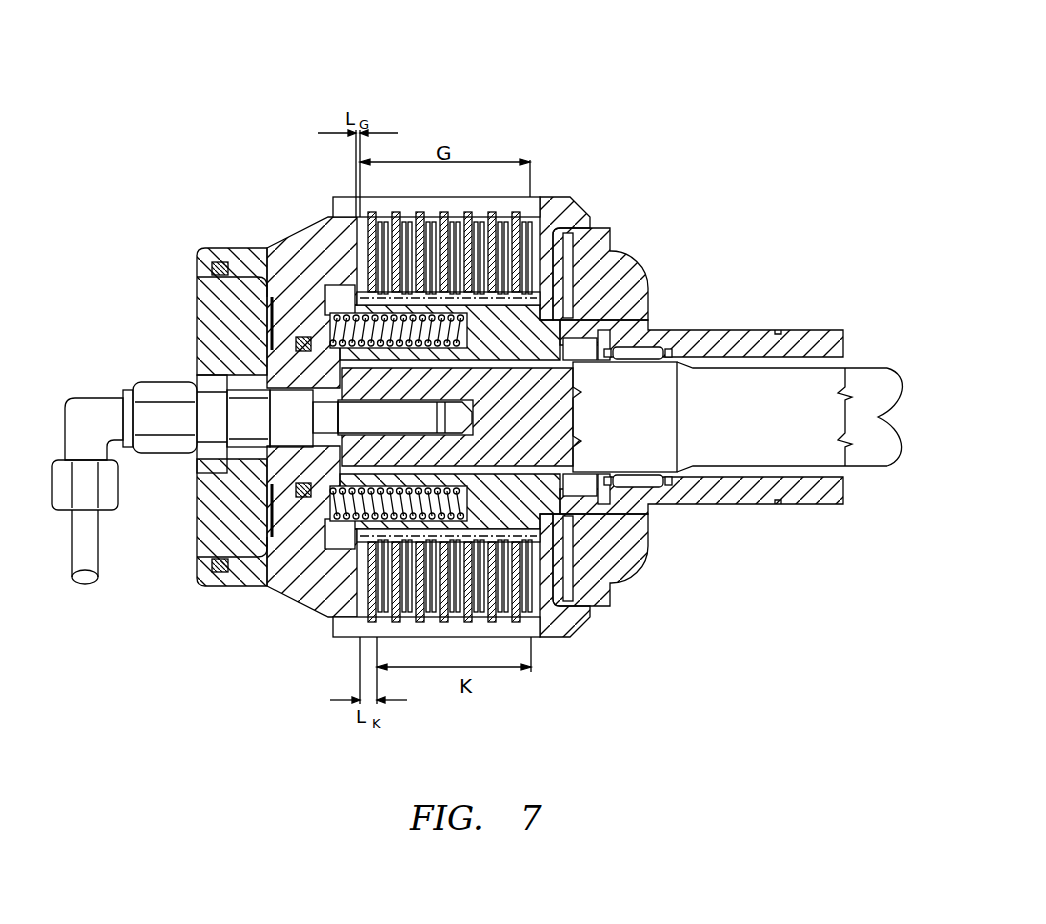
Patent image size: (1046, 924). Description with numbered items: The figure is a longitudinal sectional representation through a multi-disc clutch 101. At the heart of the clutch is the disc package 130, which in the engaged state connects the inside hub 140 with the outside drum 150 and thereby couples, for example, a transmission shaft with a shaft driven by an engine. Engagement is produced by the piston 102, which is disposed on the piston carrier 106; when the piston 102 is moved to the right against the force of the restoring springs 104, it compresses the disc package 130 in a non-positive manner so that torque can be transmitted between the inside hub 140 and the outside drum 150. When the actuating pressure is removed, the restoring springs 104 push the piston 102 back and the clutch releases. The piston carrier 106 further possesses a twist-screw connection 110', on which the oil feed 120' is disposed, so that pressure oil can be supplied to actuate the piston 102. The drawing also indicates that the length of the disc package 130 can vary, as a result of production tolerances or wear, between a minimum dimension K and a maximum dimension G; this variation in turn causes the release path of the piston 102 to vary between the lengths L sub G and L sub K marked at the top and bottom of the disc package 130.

The multi-disc clutch 101 is at (600, 176).
The piston 102 is at (316, 238).
The restoring springs 104 is at (327, 293).
The piston carrier 106 is at (200, 297).
The twist-screw connection 110' is at (201, 400).
The oil feed 120' is at (90, 542).
The disc package 130 is at (470, 257).
The inside hub 140 is at (540, 329).
The outside drum 150 is at (593, 263).